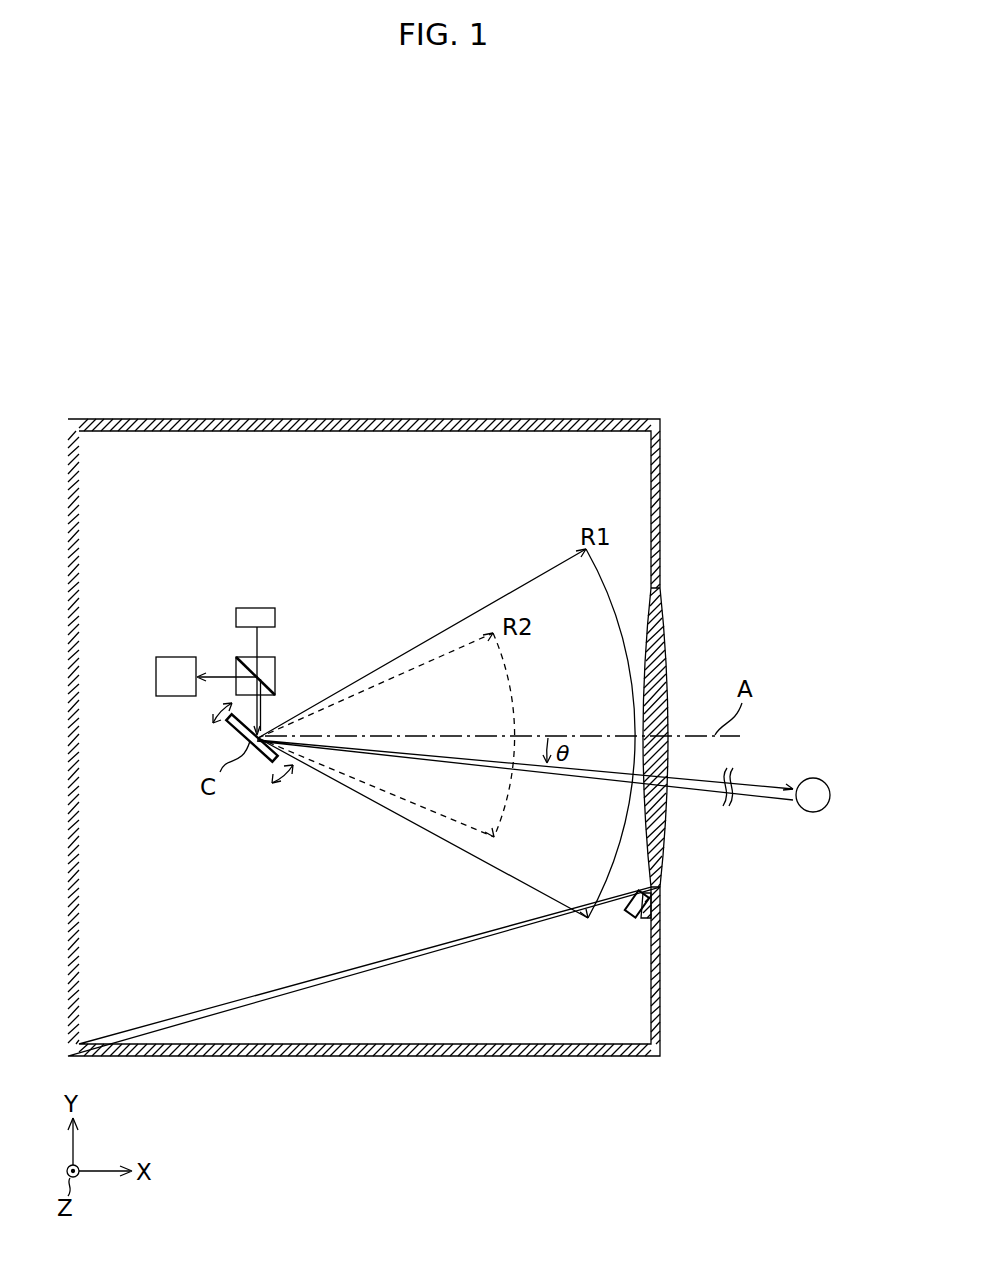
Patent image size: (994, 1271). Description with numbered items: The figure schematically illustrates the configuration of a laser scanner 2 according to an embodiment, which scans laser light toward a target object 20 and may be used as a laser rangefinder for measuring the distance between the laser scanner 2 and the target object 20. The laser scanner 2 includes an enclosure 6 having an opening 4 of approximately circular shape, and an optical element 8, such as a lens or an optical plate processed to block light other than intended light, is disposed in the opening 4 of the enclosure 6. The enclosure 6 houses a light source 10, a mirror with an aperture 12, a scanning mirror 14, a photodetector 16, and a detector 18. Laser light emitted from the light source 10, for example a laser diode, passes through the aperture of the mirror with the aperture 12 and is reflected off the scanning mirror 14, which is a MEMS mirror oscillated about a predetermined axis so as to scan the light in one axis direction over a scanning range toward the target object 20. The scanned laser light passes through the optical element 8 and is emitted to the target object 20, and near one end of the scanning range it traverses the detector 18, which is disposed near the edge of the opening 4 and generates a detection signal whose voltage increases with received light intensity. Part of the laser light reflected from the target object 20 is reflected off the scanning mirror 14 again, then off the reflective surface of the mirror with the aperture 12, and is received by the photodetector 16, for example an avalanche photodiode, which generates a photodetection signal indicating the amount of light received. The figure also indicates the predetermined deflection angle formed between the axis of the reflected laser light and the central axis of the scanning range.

The laser scanner 2 is at (645, 382).
The opening 4 is at (660, 886).
The enclosure 6 is at (657, 472).
The optical element 8 is at (665, 637).
The light source 10 is at (261, 608).
The mirror with an aperture 12 is at (277, 675).
The scanning mirror 14 is at (263, 758).
The photodetector 16 is at (175, 657).
The detector 18 is at (632, 920).
The target object 20 is at (818, 778).